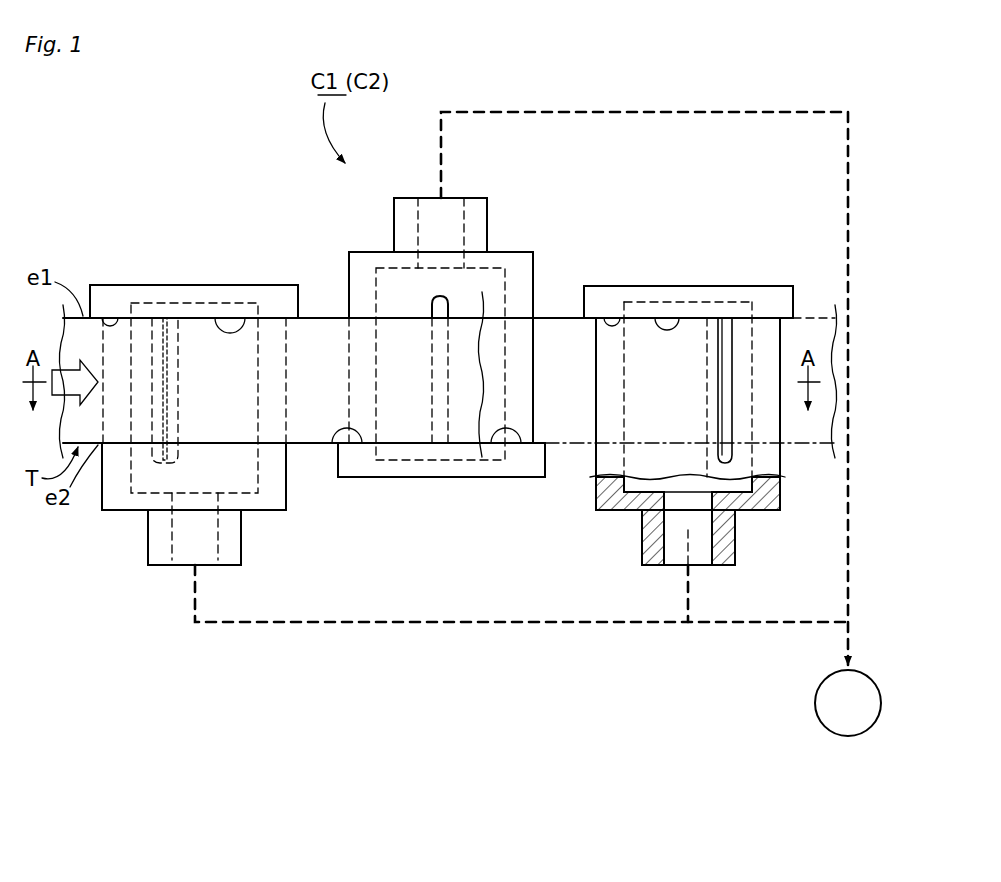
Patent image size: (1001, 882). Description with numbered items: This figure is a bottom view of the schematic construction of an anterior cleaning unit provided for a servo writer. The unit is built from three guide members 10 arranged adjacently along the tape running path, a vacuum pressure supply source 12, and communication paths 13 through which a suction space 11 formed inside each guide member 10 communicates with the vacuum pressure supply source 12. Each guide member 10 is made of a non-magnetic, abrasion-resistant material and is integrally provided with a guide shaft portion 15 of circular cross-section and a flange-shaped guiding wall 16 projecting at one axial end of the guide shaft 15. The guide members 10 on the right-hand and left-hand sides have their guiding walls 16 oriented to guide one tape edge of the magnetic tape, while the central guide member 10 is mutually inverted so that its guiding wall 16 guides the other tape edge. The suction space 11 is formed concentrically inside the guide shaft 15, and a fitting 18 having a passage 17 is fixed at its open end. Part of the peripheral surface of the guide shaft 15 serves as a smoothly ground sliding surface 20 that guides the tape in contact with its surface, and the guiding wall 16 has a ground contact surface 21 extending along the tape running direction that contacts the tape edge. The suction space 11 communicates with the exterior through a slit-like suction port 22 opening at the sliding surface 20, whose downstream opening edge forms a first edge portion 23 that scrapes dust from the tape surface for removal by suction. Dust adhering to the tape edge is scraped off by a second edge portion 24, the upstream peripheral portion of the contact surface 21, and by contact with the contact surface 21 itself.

The guide member 10 is at (427, 383).
The suction space 11 is at (245, 496).
The vacuum pressure supply source 12 is at (814, 704).
The communication path 13 is at (848, 563).
The guide shaft portion 15 is at (294, 329).
The guiding wall 16 is at (212, 291).
The passage 17 is at (186, 560).
The fitting 18 is at (148, 540).
The sliding surface 20 is at (187, 332).
The contact surface 21 is at (245, 321).
The suction port 22 is at (160, 463).
The first edge portion 23 is at (163, 355).
The second edge portion 24 is at (114, 322).